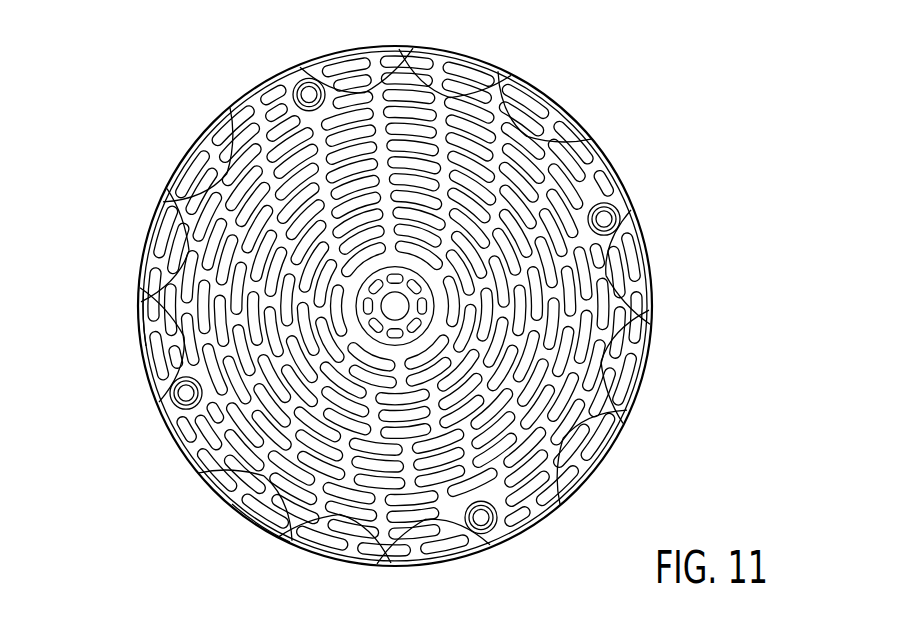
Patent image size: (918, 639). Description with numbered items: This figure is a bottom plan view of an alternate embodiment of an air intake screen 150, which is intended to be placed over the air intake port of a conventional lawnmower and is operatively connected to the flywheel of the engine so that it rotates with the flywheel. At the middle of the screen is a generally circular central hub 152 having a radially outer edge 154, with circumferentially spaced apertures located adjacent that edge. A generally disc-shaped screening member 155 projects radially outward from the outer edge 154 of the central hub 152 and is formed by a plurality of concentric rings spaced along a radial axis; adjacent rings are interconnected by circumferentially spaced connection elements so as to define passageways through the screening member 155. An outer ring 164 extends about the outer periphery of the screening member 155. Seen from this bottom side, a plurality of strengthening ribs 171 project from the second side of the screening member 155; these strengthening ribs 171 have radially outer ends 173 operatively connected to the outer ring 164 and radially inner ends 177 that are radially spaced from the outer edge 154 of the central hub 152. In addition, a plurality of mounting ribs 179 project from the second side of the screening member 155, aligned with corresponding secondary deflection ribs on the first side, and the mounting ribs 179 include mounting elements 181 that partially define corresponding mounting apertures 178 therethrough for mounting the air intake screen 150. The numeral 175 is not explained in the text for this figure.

The air intake screen 150 is at (130, 437).
The central hub 152 is at (405, 348).
The outer edge 154 is at (392, 267).
The screening member 155 is at (656, 224).
The outer ring 164 is at (262, 531).
The strengthening ribs 171 is at (238, 140).
The radially outer ends 173 is at (395, 306).
The rim wall 175 is at (148, 318).
The radially inner ends 177 is at (376, 284).
The mounting apertures 178 is at (392, 305).
The mounting ribs 179 is at (415, 296).
The mounting elements 181 is at (393, 272).